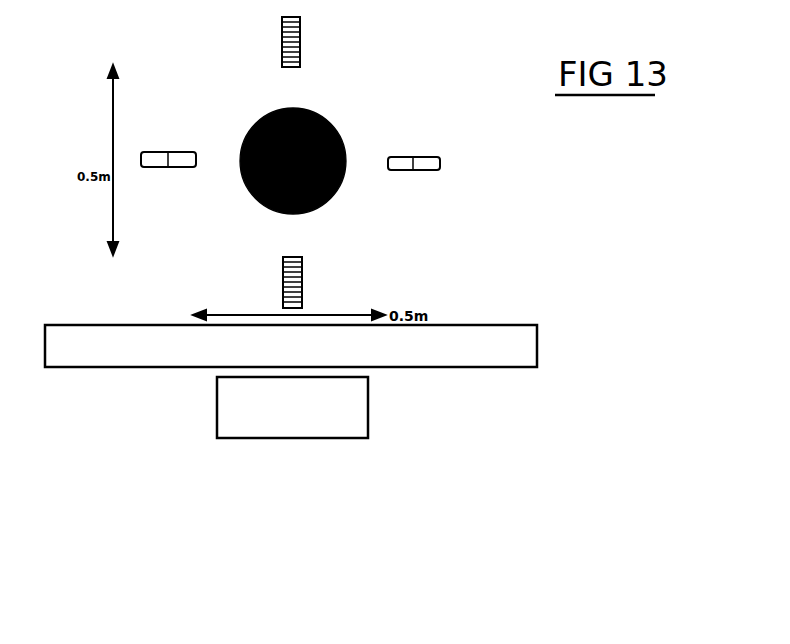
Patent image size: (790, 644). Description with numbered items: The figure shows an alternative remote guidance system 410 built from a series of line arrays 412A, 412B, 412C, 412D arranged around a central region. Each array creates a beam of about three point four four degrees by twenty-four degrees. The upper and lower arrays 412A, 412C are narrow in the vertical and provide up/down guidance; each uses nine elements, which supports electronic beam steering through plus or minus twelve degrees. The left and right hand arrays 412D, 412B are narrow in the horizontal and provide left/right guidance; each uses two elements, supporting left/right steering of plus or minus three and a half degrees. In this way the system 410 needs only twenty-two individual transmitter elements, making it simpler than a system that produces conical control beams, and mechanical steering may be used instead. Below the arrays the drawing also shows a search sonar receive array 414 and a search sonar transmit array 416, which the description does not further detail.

The remote guidance system 410 is at (618, 218).
The upper line array 412A is at (300, 45).
The right hand line array 412B is at (423, 155).
The lower line array 412C is at (302, 285).
The left hand line array 412D is at (176, 168).
The search sonar RX array 414 is at (520, 355).
The search sonar Tx array 416 is at (350, 425).